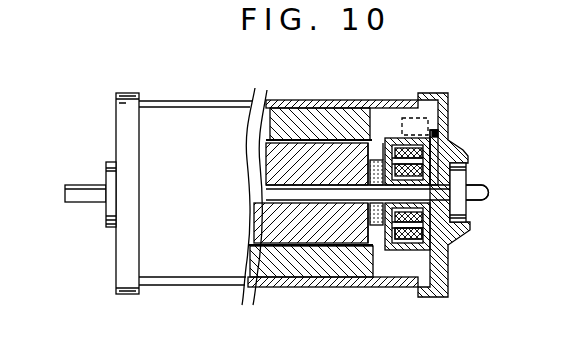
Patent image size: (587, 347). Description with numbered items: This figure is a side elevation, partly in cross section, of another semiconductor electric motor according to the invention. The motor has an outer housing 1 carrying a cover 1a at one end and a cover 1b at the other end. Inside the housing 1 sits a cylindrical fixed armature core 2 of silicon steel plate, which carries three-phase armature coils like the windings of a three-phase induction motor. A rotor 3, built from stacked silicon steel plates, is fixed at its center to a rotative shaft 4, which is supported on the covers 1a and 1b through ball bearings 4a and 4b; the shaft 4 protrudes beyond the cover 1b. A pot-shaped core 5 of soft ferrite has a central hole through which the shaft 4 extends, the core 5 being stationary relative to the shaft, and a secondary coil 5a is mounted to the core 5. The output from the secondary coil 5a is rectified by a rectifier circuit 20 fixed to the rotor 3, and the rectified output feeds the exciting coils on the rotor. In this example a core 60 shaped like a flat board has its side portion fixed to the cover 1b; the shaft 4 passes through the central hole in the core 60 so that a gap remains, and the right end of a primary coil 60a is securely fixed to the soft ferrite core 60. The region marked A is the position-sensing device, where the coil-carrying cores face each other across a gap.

The outer housing 1 is at (213, 100).
The cover 1a is at (131, 93).
The cover 1b is at (441, 93).
The fixed armature core 2 is at (340, 112).
The rotor 3 is at (296, 141).
The rotative shaft 4 is at (70, 202).
The ball bearing 4a is at (107, 162).
The ball bearing 4b is at (463, 170).
The pot-shaped core 5 is at (387, 233).
The secondary coil 5a is at (467, 215).
The rectifier circuit 20 is at (375, 157).
The core 60 is at (462, 238).
The primary coil 60a is at (414, 242).
The position-sensing device A is at (413, 118).